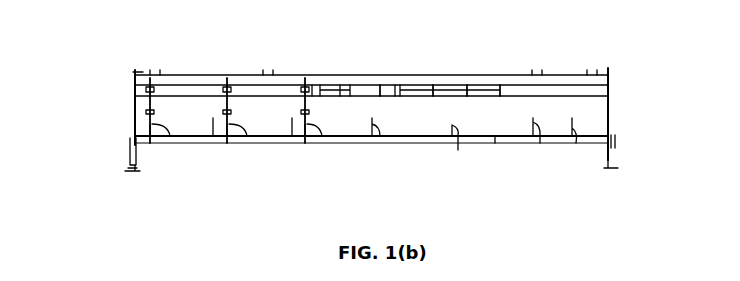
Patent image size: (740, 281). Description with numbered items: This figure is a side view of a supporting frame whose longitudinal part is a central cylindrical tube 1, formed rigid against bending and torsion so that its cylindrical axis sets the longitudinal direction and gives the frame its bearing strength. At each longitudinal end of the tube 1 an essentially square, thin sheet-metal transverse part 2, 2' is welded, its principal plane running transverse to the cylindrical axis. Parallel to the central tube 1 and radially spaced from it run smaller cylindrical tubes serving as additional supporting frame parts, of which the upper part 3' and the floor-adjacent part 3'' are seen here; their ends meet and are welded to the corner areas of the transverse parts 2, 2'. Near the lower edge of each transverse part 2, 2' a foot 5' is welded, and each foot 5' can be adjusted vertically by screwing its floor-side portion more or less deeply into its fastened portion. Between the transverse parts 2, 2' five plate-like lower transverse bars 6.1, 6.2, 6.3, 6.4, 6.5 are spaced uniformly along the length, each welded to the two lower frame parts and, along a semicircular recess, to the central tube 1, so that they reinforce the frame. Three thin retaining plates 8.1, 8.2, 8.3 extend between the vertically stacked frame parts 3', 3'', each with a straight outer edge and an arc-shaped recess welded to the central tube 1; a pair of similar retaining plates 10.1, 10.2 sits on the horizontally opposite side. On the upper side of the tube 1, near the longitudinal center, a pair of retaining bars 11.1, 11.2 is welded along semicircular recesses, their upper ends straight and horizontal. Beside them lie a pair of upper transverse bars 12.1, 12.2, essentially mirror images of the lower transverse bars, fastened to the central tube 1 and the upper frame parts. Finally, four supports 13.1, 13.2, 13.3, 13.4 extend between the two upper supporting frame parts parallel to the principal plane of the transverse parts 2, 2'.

The central cylindrical tube 1 is at (572, 150).
The transverse part 2 is at (100, 107).
The transverse part 2' is at (626, 114).
The additional supporting frame part 3' is at (510, 48).
The additional supporting frame part 3'' is at (497, 168).
The foot 5' is at (363, 173).
The lower transverse bar 6.1 is at (213, 140).
The lower transverse bar 6.2 is at (292, 122).
The lower transverse bar 6.3 is at (380, 132).
The lower transverse bar 6.4 is at (452, 127).
The lower transverse bar 6.5 is at (538, 144).
The retaining plate 8.1 is at (168, 138).
The retaining plate 8.2 is at (245, 138).
The retaining plate 8.3 is at (318, 138).
The retaining plate 10.1 is at (315, 75).
The retaining plate 10.2 is at (395, 88).
The retaining bar 11.1 is at (342, 96).
The retaining bar 11.2 is at (382, 90).
The upper transverse bar 12.1 is at (433, 70).
The upper transverse bar 12.2 is at (473, 73).
The support 13.1 is at (157, 63).
The support 13.2 is at (270, 63).
The support 13.3 is at (538, 63).
The support 13.4 is at (593, 63).